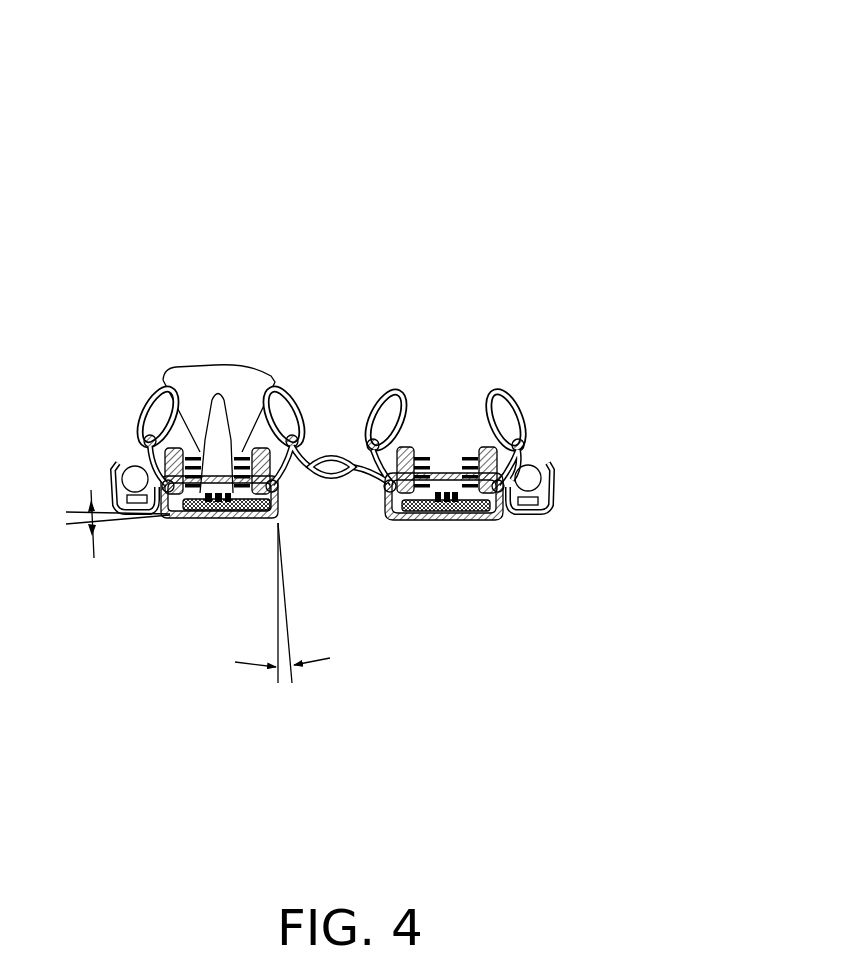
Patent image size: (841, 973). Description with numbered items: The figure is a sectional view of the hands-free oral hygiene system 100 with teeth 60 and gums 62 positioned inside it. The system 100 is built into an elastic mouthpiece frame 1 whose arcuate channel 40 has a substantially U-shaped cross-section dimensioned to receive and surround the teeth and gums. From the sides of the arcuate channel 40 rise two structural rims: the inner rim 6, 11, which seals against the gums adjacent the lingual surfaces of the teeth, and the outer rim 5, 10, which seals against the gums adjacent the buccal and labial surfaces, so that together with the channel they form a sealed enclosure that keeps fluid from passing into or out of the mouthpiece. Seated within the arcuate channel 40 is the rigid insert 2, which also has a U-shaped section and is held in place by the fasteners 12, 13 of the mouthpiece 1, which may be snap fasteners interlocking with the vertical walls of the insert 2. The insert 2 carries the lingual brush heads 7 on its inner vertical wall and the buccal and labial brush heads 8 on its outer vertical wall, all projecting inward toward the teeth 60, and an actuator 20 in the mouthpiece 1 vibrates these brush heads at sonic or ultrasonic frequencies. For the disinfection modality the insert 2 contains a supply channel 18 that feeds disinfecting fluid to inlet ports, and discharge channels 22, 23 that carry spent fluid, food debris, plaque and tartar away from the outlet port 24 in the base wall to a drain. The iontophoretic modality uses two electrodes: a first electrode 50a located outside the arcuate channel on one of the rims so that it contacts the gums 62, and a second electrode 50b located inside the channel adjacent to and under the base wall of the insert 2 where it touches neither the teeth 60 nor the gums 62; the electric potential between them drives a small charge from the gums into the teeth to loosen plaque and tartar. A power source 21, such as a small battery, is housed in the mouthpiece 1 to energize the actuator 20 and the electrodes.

The oral hygiene system 100 is at (451, 100).
The mouthpiece frame 1 is at (404, 528).
The insert 2 is at (207, 517).
The outer rim 5 is at (155, 386).
The inner rim 6 is at (380, 388).
The lingual brush heads 7 is at (420, 450).
The buccal and labial brush heads 8 is at (458, 458).
The outer rim 10 is at (532, 464).
The inner rim 11 is at (366, 437).
The fastener 12 is at (417, 518).
The fastener 13 is at (483, 518).
The supply channel 18 is at (478, 450).
The actuator 20 is at (546, 462).
The power source 21 is at (533, 514).
The discharge channel 22 is at (246, 510).
The discharge channel 23 is at (168, 512).
The outlet port 24 is at (195, 513).
The arcuate channel 40 is at (167, 513).
The first electrode 50a is at (484, 448).
The second electrode 50b is at (462, 518).
The teeth 60 is at (206, 488).
The gums 62 is at (187, 400).